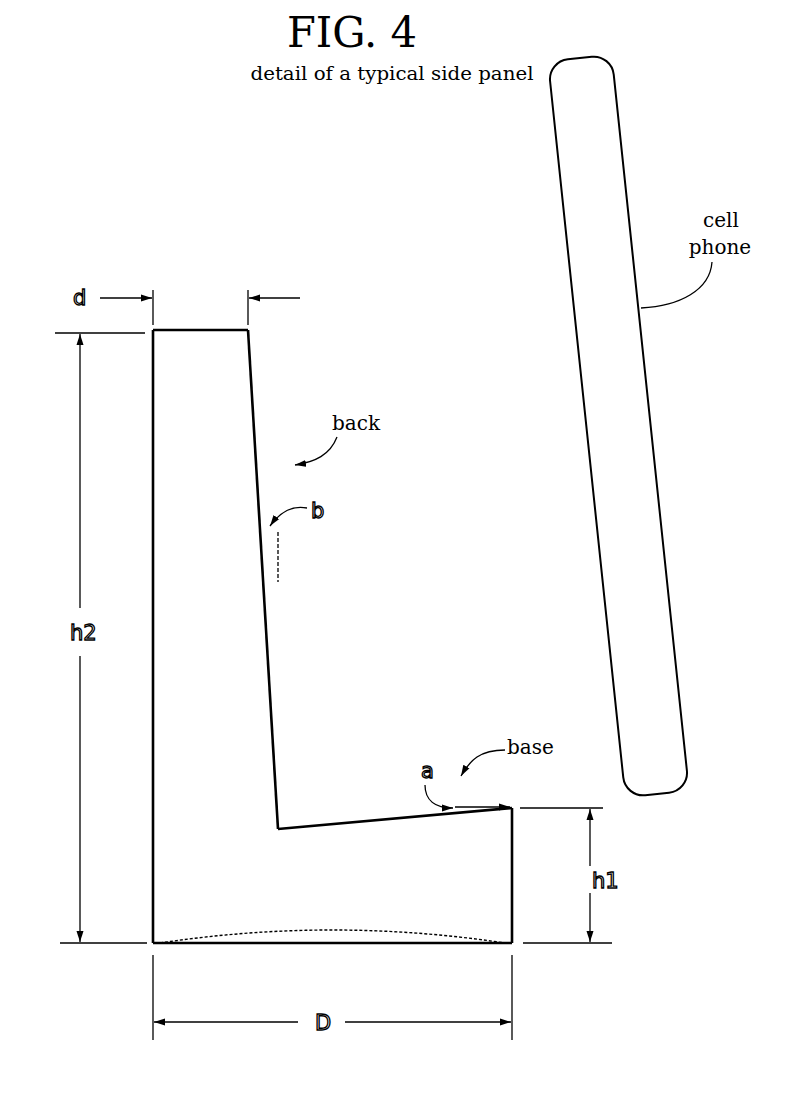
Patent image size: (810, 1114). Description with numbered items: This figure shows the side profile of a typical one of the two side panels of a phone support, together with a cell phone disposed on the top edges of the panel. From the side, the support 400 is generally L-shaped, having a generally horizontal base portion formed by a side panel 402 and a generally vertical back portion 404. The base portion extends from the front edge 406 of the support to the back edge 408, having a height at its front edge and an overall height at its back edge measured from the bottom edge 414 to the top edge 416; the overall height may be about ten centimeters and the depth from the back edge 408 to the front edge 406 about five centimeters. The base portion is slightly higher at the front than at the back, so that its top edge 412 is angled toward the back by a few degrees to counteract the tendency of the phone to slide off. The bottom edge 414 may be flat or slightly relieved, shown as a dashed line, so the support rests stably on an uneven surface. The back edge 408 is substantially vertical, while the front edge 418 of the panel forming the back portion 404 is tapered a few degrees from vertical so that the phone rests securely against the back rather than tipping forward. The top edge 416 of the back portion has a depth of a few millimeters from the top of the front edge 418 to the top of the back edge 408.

The support 400 is at (118, 229).
The side panel 402 is at (365, 871).
The back portion 404 is at (223, 601).
The front edge 406 is at (515, 828).
The back edge 408 is at (152, 568).
The top edge of the base portion 412 is at (325, 827).
The bottom edge 414 is at (320, 946).
The top edge 416 is at (200, 329).
The front edge of the back portion 418 is at (276, 728).